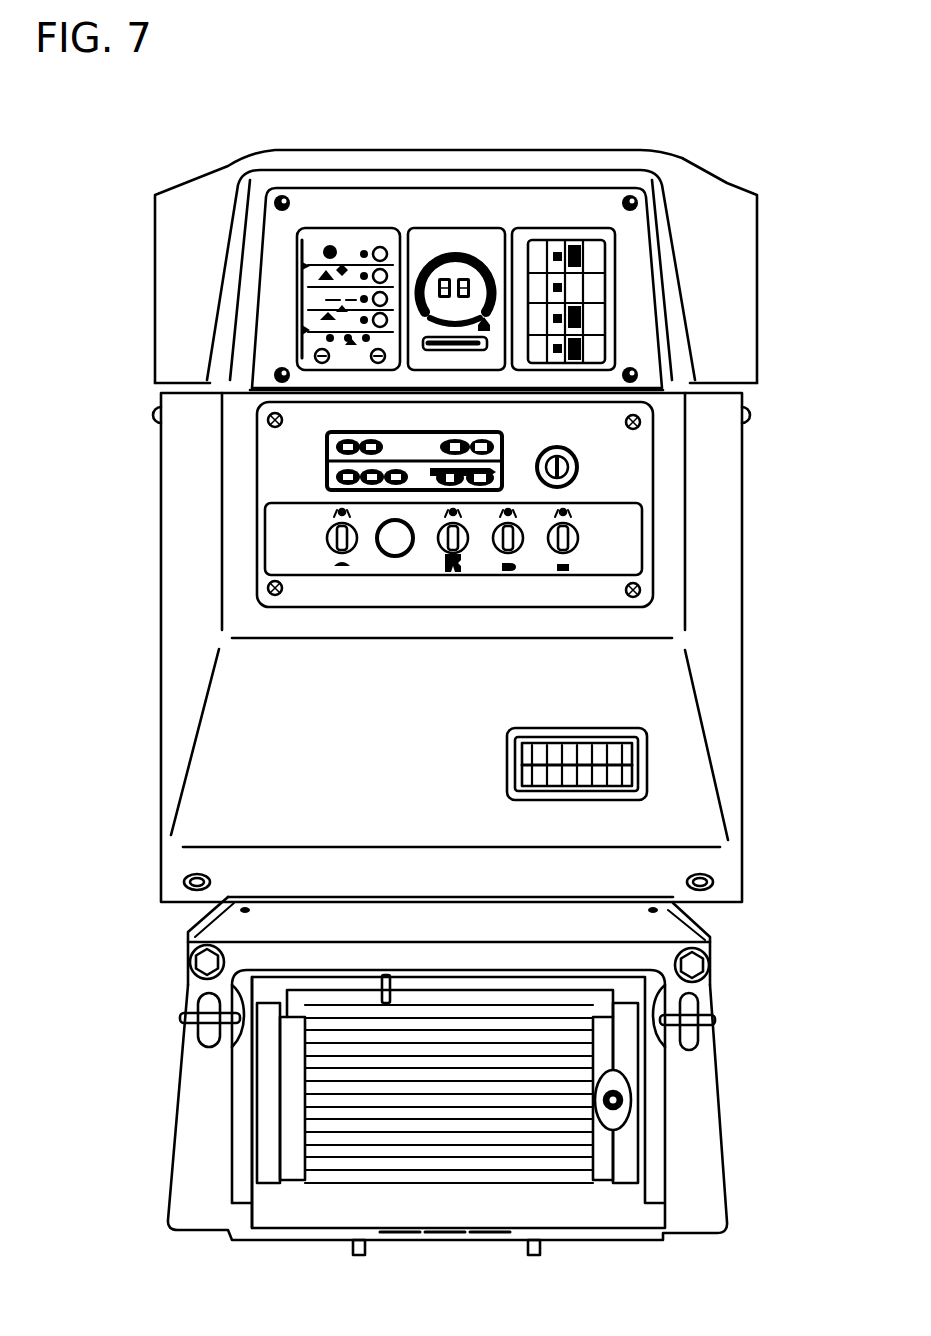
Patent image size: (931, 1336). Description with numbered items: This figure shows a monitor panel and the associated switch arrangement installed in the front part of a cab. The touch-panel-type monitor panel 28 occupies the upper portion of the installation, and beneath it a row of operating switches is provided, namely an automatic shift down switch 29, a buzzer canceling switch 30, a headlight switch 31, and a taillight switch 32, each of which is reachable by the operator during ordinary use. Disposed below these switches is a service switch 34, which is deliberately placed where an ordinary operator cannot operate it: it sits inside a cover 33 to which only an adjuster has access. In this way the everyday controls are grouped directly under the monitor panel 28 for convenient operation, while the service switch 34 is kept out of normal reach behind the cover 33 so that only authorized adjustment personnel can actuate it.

The monitor panel 28 is at (277, 272).
The automatic shift down switch 29 is at (325, 545).
The buzzer canceling switch 30 is at (463, 530).
The headlight switch 31 is at (523, 528).
The taillight switch 32 is at (570, 550).
The cover 33 is at (720, 1085).
The service switch 34 is at (618, 1105).